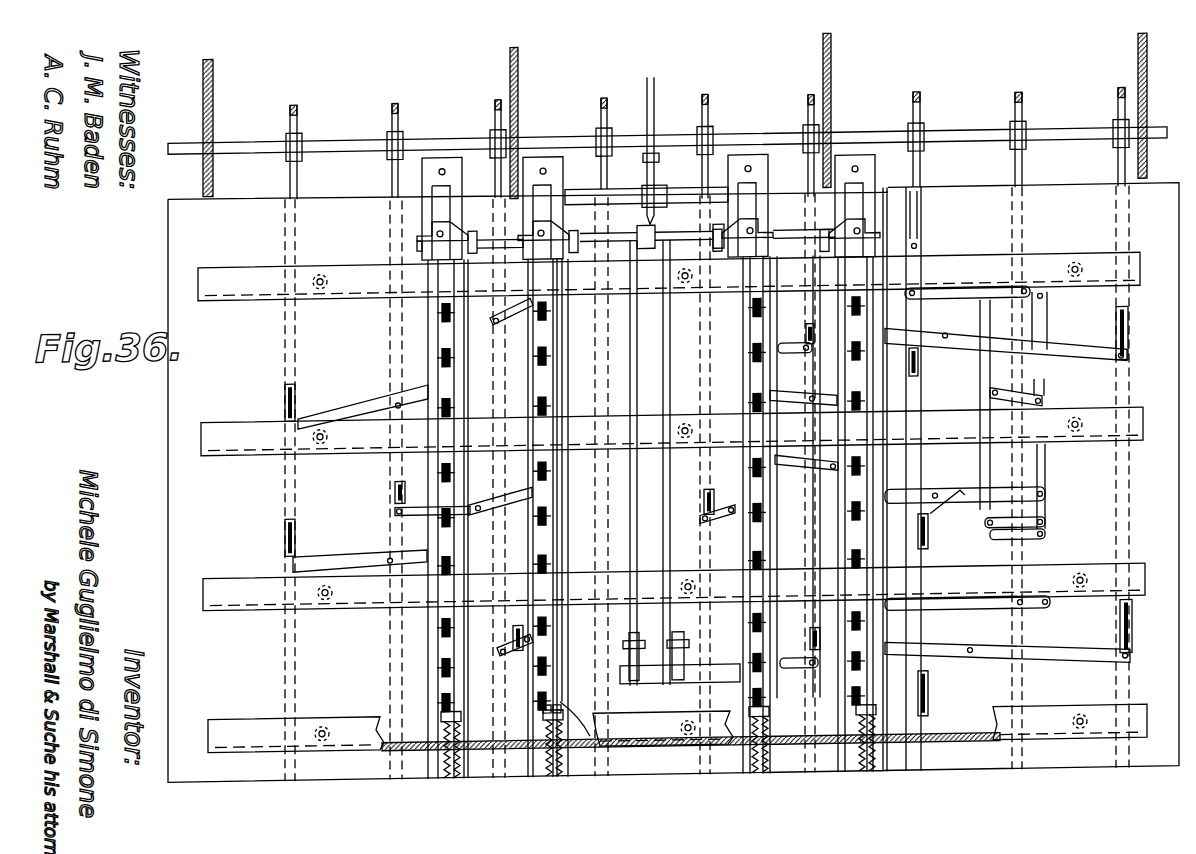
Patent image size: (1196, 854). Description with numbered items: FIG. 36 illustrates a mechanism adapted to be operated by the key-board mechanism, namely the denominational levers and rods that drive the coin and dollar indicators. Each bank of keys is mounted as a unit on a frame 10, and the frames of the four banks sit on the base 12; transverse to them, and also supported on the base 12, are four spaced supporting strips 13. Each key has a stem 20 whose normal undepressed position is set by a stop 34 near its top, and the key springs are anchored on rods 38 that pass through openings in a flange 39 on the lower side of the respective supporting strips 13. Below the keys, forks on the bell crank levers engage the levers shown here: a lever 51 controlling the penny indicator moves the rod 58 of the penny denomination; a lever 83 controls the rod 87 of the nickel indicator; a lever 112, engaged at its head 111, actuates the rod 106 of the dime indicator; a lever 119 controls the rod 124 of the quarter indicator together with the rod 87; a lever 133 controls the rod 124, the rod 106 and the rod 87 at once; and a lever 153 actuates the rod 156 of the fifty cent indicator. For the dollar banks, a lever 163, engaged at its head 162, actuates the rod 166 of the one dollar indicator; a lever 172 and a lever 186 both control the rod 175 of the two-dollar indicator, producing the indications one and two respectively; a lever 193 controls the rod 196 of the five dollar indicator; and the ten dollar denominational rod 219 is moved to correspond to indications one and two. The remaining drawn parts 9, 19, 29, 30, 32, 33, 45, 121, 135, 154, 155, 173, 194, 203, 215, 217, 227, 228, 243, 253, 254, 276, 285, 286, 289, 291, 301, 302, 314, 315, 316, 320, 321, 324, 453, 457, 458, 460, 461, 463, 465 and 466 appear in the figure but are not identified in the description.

The clamp 9 is at (679, 642).
The frame 10 is at (427, 322).
The base 12 is at (170, 474).
The transverse supporting strips 13 is at (672, 502).
The clamp 19 is at (628, 640).
The stem 20 is at (538, 358).
The guide 29 is at (520, 300).
The bar 30 is at (691, 755).
The post 32 is at (392, 100).
The spring 33 is at (458, 775).
The stop 34 is at (540, 553).
The rod 38 is at (395, 497).
The flange 39 is at (818, 785).
The clamp 45 is at (428, 222).
The lever 51 is at (1008, 657).
The rod 58 is at (1120, 170).
The lever 83 is at (995, 505).
The rod 87 is at (1016, 176).
The rod 106 is at (920, 180).
The head 111 is at (770, 398).
The lever 112 is at (789, 400).
The lever 119 is at (965, 610).
The link 121 is at (799, 651).
The rod 124 is at (792, 173).
The lever 133 is at (967, 293).
The link 135 is at (795, 338).
The lever 153 is at (708, 522).
The link 154 is at (701, 514).
The slot block 155 is at (705, 505).
The rod 156 is at (646, 181).
The head 162 is at (550, 700).
The lever 163 is at (610, 705).
The rod 166 is at (600, 185).
The lever 172 is at (523, 632).
The link 173 is at (501, 644).
The rod 175 is at (457, 207).
The lever 186 is at (499, 331).
The lever 193 is at (478, 500).
The link 194 is at (410, 519).
The rod 196 is at (394, 176).
The lever 203 is at (832, 688).
The lever 215 is at (360, 555).
The slot block 217 is at (267, 538).
The ten dollar denominational rod 219 is at (290, 170).
The lever 227 is at (355, 410).
The slot block 228 is at (285, 395).
The lever 243 is at (965, 491).
The link 253 is at (805, 477).
The pin 254 is at (832, 490).
The link 276 is at (830, 535).
The slot block 285 is at (985, 545).
The link 286 is at (1040, 528).
The link 289 is at (1045, 540).
The link 291 is at (985, 526).
The rail 301 is at (1047, 320).
The rail 302 is at (980, 384).
The link 314 is at (1025, 400).
The rail 315 is at (1045, 482).
The lever 316 is at (980, 328).
The bracket 320 is at (404, 130).
The shaft 321 is at (667, 125).
The posts 324 is at (1020, 97).
The rod 453 is at (650, 77).
The block 457 is at (470, 232).
The block 458 is at (630, 225).
The block 460 is at (689, 694).
The rod 461 is at (689, 552).
The hook 463 is at (658, 153).
The block 465 is at (647, 695).
The rod 466 is at (657, 548).